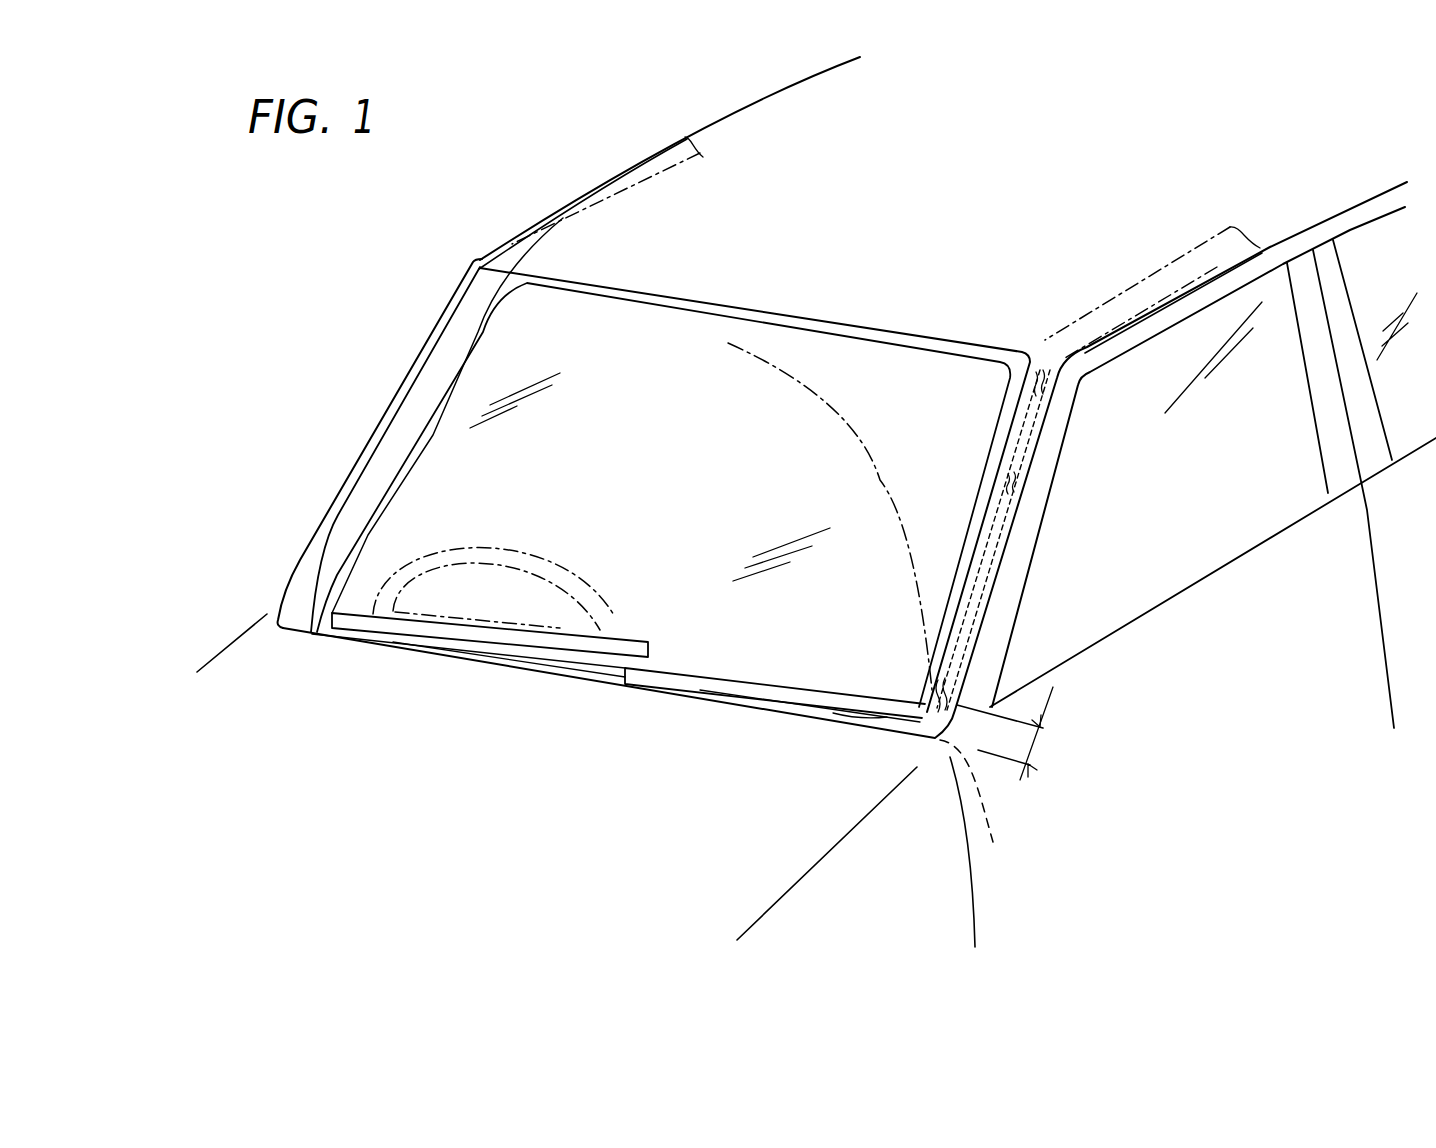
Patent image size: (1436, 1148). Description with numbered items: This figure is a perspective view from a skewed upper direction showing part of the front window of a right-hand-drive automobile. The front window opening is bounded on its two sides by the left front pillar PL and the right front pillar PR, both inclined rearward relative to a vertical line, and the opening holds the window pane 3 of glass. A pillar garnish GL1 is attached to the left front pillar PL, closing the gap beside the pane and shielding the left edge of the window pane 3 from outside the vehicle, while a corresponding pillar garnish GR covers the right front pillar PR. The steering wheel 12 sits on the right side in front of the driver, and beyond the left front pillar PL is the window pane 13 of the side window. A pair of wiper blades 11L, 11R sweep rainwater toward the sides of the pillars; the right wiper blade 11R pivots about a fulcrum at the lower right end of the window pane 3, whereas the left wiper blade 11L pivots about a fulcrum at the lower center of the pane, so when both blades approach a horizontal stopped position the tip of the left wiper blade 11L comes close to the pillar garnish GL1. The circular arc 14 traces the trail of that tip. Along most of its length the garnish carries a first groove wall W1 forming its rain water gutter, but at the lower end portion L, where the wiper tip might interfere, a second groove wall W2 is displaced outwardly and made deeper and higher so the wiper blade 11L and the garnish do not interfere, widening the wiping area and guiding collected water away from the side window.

The window pane 3 is at (575, 333).
The pillar garnish on the right side GR is at (413, 397).
The right front pillar PR is at (309, 542).
The steering wheel 12 is at (480, 545).
The wiper blade on the right side 11R is at (637, 640).
The wiper blade on the left side 11L is at (823, 697).
The circular arc 14 is at (833, 416).
The pillar garnish on the left side GL1 is at (1032, 453).
The first groove wall W1 is at (997, 498).
The left front pillar PL is at (1022, 563).
The window pane of a side window 13 is at (1215, 510).
The lower end portion of the pillar garnish L is at (1037, 753).
The second groove wall W2 is at (989, 812).